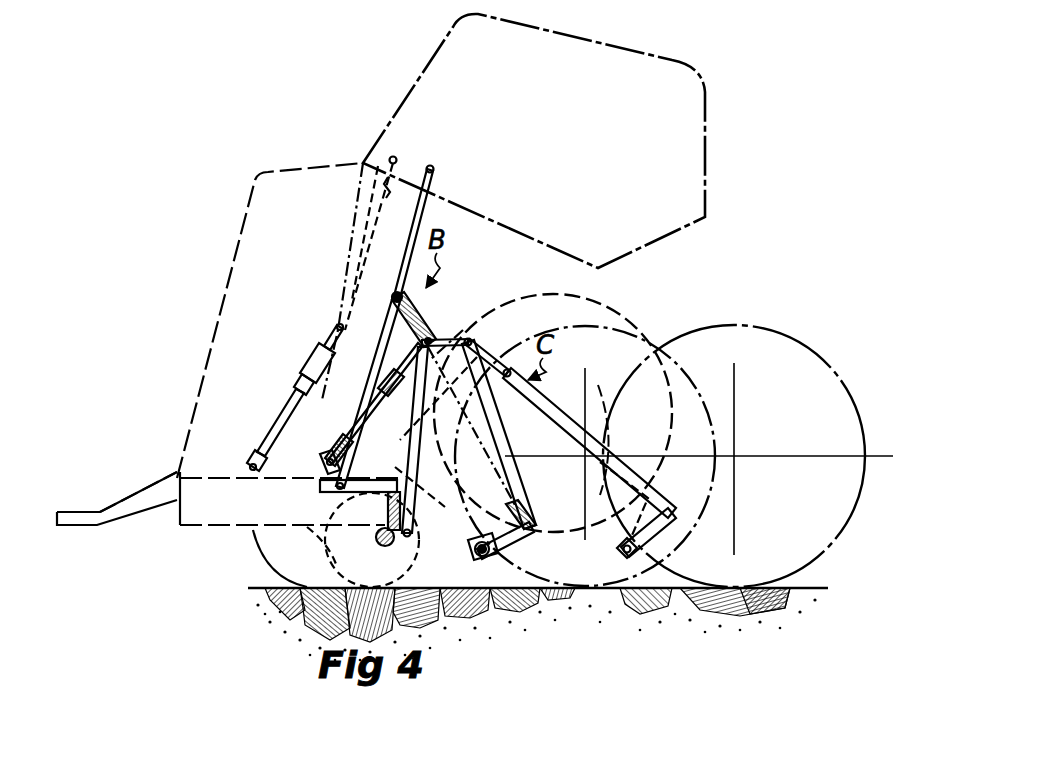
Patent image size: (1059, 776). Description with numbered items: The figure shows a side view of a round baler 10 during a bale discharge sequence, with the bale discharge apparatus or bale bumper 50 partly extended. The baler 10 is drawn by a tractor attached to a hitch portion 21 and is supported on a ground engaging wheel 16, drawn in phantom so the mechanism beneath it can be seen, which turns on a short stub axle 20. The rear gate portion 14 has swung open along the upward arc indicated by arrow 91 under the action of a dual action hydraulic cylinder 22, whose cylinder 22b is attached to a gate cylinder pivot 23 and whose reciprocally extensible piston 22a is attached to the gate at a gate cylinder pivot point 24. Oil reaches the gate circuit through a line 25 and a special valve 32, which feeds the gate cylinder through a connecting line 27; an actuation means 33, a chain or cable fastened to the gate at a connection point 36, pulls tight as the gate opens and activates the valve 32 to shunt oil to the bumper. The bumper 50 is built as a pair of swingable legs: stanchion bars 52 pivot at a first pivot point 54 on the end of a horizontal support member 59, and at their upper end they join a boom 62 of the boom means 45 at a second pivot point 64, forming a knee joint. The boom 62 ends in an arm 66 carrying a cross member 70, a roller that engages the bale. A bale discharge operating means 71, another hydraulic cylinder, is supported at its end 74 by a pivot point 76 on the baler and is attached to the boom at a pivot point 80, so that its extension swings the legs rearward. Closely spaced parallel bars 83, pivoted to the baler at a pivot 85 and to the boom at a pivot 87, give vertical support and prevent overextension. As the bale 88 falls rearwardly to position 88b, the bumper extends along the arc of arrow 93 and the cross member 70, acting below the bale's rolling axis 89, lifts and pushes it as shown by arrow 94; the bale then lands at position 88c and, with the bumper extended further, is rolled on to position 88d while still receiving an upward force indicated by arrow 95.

The baler 10 is at (238, 163).
The rear gate portion 14 is at (707, 118).
The ground engaging wheel 16 is at (300, 543).
The stub axle 20 is at (374, 546).
The hitch portion 21 is at (72, 512).
The dual action hydraulic cylinder 22 is at (324, 320).
The reciprocally extensible piston 22a is at (406, 231).
The cylinder 22b is at (262, 433).
The gate cylinder pivot 23 is at (252, 478).
The gate cylinder pivot point 24 is at (435, 170).
The line 25 is at (292, 372).
The connecting line 27 is at (314, 386).
The special valve 32 is at (291, 385).
The actuation means 33 is at (385, 192).
The connection point 36 is at (395, 158).
The boom means 45 is at (609, 441).
The bale bumper 50 is at (432, 312).
The stanchion bars 52 is at (392, 336).
The first pivot point 54 is at (345, 494).
The horizontal support member 59 is at (318, 487).
The boom 62 is at (486, 440).
The second pivot point 64 is at (397, 292).
The arm 66 is at (504, 527).
The cross member 70 is at (474, 558).
The bale discharge operating means 71 is at (338, 440).
The end 74 is at (295, 392).
The pivot point 76 is at (322, 462).
The pivot point 80 is at (400, 353).
The parallel bars 83 is at (372, 492).
The pivot 85 is at (391, 555).
The pivot 87 is at (431, 334).
The bale 88 is at (523, 321).
The bale position 88b is at (592, 300).
The bale position 88c is at (610, 325).
The bale position 88d is at (729, 327).
The rolling axis 89 is at (584, 458).
The arrow 91 is at (690, 287).
The arrow 93 is at (441, 572).
The arrow 94 is at (496, 566).
The arrow 95 is at (636, 556).